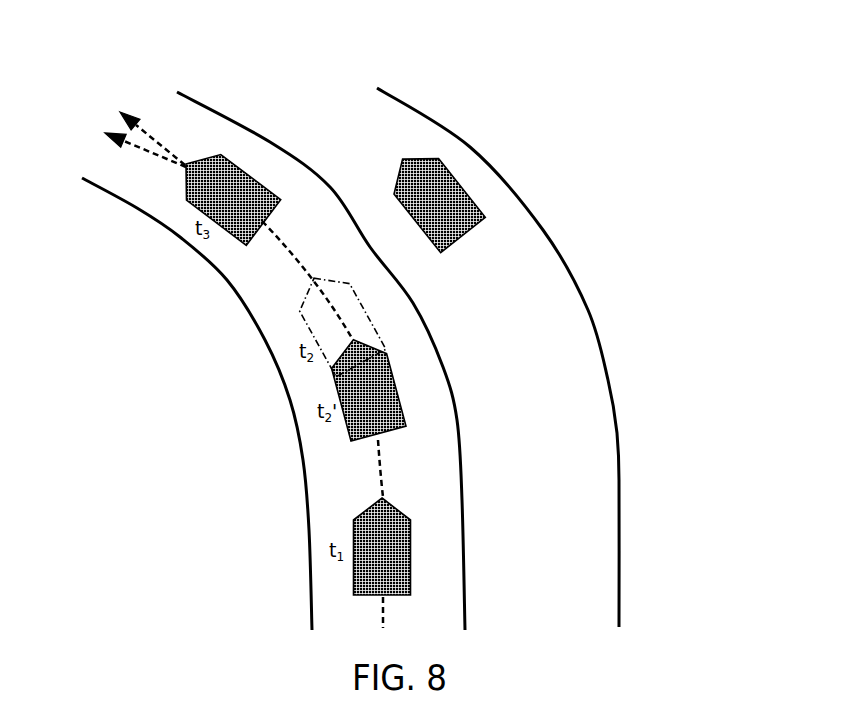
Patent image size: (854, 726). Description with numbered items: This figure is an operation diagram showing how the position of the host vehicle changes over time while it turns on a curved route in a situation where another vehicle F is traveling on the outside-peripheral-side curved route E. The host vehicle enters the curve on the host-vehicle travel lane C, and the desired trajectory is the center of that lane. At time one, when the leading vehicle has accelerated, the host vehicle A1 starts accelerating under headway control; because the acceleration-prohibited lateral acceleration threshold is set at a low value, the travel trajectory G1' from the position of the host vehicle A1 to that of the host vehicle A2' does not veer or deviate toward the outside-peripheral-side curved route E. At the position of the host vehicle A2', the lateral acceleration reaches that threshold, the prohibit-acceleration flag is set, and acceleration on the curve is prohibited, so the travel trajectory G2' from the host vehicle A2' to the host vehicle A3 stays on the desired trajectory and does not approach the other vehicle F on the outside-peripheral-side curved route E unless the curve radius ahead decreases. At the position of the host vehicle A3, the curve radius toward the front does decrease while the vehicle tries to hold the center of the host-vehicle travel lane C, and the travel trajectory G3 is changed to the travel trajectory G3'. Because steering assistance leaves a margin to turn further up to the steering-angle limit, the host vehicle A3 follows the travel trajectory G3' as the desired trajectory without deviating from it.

The host vehicle A1 is at (413, 558).
The host vehicle A2' is at (422, 386).
The host vehicle A3 is at (238, 168).
The other vehicle F is at (452, 170).
The host-vehicle travel lane C is at (333, 483).
The outside-peripheral-side curved route E is at (575, 503).
The travel trajectory G1' is at (451, 468).
The travel trajectory G2' is at (269, 280).
The travel trajectory G3 is at (152, 114).
The travel trajectory G3' is at (124, 188).